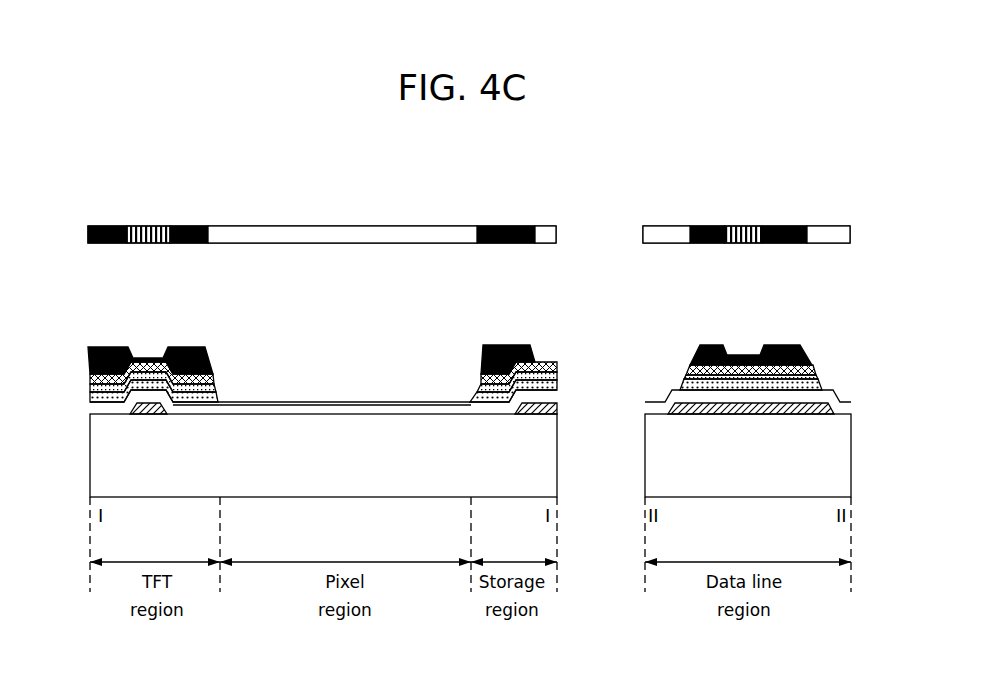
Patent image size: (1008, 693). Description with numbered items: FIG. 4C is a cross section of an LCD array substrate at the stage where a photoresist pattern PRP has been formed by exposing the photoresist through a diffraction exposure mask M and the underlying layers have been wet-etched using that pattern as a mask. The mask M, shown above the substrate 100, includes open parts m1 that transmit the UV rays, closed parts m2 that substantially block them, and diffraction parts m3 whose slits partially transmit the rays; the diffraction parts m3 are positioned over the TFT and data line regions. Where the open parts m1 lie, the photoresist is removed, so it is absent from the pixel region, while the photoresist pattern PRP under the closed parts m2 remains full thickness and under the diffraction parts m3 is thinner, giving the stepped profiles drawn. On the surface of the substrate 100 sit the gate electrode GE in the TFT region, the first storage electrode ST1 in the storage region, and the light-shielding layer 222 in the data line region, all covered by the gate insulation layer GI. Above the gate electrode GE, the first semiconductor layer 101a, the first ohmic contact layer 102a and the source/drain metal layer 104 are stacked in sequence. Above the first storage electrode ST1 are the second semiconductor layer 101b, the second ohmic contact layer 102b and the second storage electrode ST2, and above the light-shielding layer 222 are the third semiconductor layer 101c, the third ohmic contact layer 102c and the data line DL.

The open parts m1 is at (344, 232).
The closed parts m2 is at (181, 232).
The diffraction parts m3 is at (143, 232).
The diffraction exposure mask M is at (556, 235).
The photoresist pattern PRP is at (118, 346).
The source/drain metal layer 104 is at (90, 379).
The first ohmic contact layer 102a is at (90, 388).
The first semiconductor layer 101a is at (90, 399).
The gate insulation layer GI is at (89, 414).
The substrate 100 is at (93, 458).
The gate electrode GE is at (146, 417).
The second storage electrode ST2 is at (479, 378).
The second ohmic contact layer 102b is at (480, 391).
The second semiconductor layer 101b is at (462, 404).
The first storage electrode ST1 is at (530, 415).
The third ohmic contact layer 102c is at (682, 377).
The third semiconductor layer 101c is at (683, 388).
The light-shielding layer 222 is at (672, 412).
The data line DL is at (822, 370).